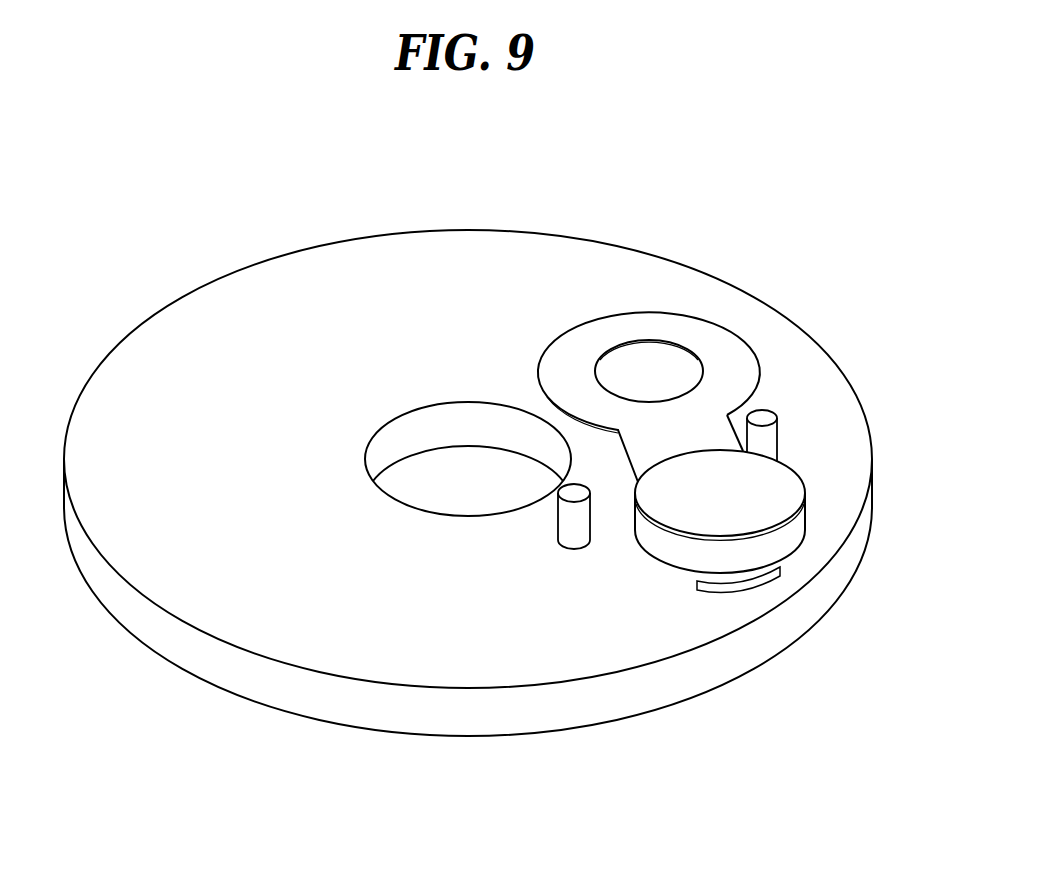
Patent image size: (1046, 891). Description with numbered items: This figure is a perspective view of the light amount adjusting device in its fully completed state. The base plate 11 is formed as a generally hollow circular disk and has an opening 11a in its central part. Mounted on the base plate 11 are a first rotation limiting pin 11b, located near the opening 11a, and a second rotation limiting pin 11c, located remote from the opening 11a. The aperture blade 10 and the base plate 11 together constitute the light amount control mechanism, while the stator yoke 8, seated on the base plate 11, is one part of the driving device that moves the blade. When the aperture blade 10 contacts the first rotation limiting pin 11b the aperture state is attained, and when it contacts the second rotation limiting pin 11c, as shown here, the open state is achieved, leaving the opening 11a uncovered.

The stator yoke 8 is at (753, 507).
The aperture blade 10 is at (712, 345).
The base plate 11 is at (617, 275).
The opening 11a is at (477, 477).
The first rotation limiting pin 11b is at (579, 531).
The second rotation limiting pin 11c is at (779, 442).